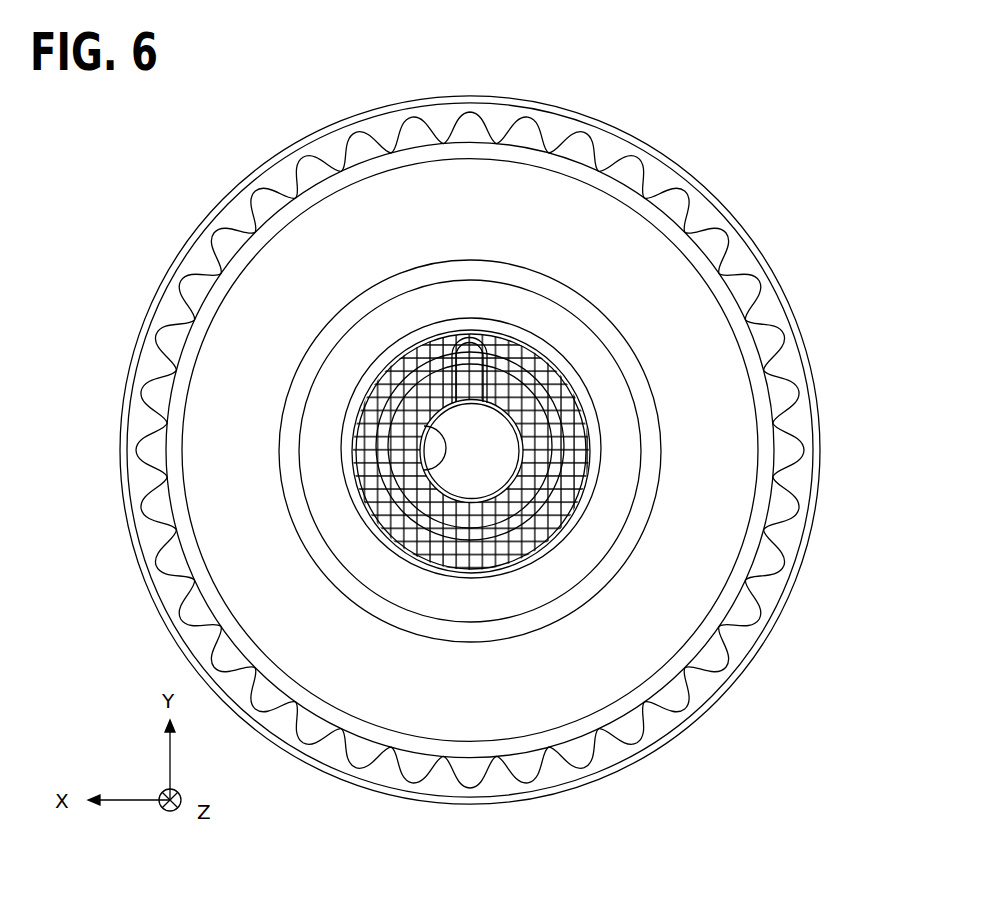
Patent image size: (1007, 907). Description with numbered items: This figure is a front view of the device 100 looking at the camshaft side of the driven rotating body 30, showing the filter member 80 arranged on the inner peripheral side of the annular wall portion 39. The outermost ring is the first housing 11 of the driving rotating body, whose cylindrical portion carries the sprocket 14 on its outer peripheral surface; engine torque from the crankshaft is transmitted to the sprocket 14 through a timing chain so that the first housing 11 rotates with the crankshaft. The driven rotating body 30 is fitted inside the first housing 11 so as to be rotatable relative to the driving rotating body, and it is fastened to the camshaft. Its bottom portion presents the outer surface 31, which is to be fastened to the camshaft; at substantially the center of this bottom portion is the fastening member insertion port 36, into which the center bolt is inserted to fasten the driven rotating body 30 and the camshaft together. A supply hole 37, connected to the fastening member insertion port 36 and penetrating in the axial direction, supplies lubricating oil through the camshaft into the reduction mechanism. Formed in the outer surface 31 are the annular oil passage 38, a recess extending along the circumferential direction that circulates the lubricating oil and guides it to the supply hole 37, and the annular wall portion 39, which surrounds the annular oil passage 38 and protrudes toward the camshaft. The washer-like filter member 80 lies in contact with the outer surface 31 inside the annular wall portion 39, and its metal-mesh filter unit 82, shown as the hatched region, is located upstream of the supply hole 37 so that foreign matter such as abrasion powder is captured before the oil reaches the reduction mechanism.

The gear device 100 is at (790, 89).
The first housing 11 is at (603, 158).
The sprocket 14 is at (628, 170).
The filter member 80 is at (348, 358).
The filter unit 82 is at (413, 363).
The driven rotating body 30 is at (635, 366).
The outer surface 31 is at (495, 510).
The fastening member insertion port 36 is at (372, 470).
The supply hole 37 is at (473, 388).
The annular oil passage 38 is at (493, 511).
The annular wall portion 39 is at (593, 462).